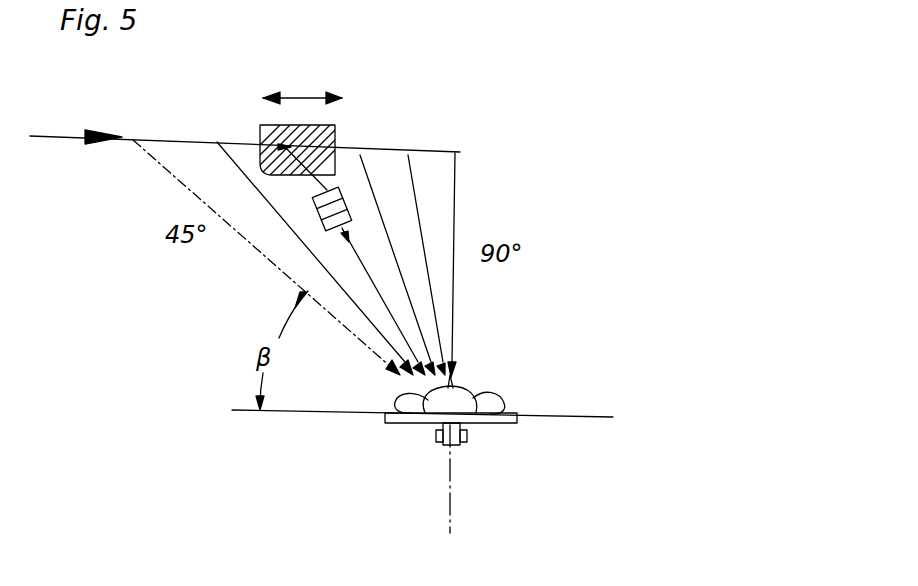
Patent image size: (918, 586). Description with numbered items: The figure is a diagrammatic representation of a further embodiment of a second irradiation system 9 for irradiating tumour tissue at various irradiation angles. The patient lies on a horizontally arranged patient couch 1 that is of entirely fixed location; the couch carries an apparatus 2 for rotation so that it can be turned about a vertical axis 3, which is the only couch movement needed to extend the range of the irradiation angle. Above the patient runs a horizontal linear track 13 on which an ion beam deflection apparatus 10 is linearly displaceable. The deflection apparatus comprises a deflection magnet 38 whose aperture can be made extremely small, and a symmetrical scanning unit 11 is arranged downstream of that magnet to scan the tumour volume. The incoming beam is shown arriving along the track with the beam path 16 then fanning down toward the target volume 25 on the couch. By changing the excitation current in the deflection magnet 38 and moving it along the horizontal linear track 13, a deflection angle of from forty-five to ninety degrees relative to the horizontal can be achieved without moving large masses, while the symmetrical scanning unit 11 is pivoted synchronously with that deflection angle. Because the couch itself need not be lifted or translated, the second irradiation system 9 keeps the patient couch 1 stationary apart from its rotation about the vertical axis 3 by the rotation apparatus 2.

The patient couch 1 is at (517, 423).
The apparatus for rotation 2 is at (466, 440).
The vertical axis 3 is at (447, 472).
The second irradiation system 9 is at (533, 127).
The ion beam deflection apparatus 10 is at (353, 129).
The symmetrical scanning unit 11 is at (347, 195).
The horizontal linear track 13 is at (228, 143).
The x-ray beam 16 is at (63, 137).
The sample 25 is at (481, 395).
The deflection magnet 38 is at (333, 127).